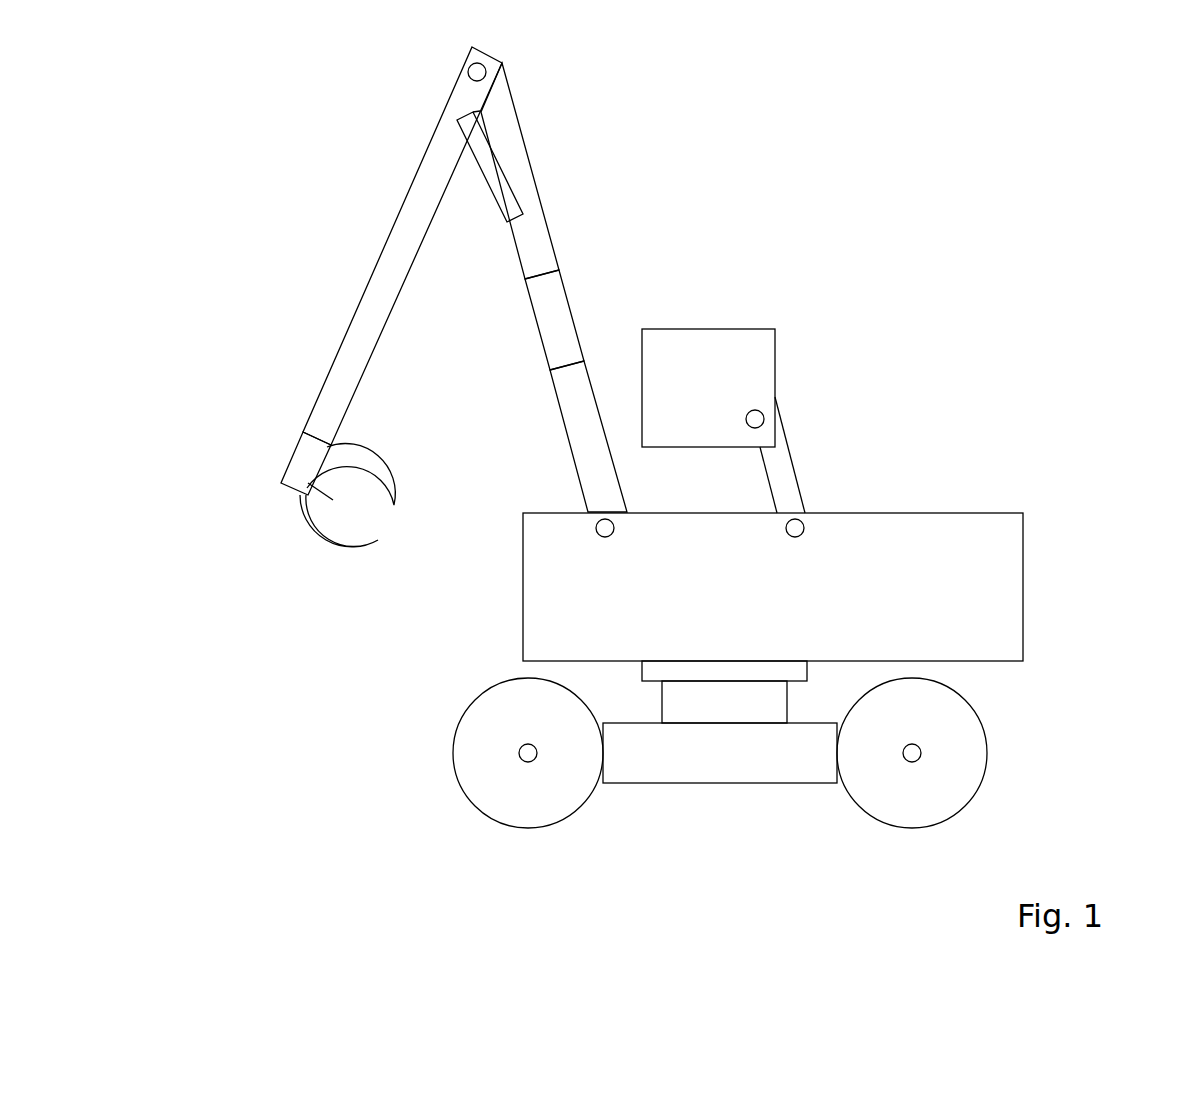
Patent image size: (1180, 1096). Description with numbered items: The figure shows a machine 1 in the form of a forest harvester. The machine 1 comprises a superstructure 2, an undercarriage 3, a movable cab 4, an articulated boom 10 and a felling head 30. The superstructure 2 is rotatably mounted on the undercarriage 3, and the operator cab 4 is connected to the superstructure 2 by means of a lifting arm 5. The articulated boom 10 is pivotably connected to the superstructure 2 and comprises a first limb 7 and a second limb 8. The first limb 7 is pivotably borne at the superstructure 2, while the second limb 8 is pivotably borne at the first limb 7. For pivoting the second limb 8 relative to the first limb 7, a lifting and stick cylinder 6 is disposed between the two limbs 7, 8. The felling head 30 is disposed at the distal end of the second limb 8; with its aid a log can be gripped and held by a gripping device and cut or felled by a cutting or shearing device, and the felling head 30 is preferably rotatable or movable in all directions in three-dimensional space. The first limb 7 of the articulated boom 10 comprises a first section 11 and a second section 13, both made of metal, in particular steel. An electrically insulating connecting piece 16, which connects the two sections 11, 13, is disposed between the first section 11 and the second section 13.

The machine 1 is at (863, 348).
The superstructure 2 is at (1042, 542).
The undercarriage 3 is at (1025, 727).
The movable cab 4 is at (755, 303).
The lifting arm 5 is at (790, 477).
The lifting and stick cylinder 6 is at (487, 168).
The first limb 7 is at (572, 290).
The second limb 8 is at (366, 278).
The articulated boom 10 is at (397, 135).
The first section 11 is at (528, 250).
The second section 13 is at (577, 427).
The electrically insulating connecting piece 16 is at (548, 335).
The felling head 30 is at (287, 457).